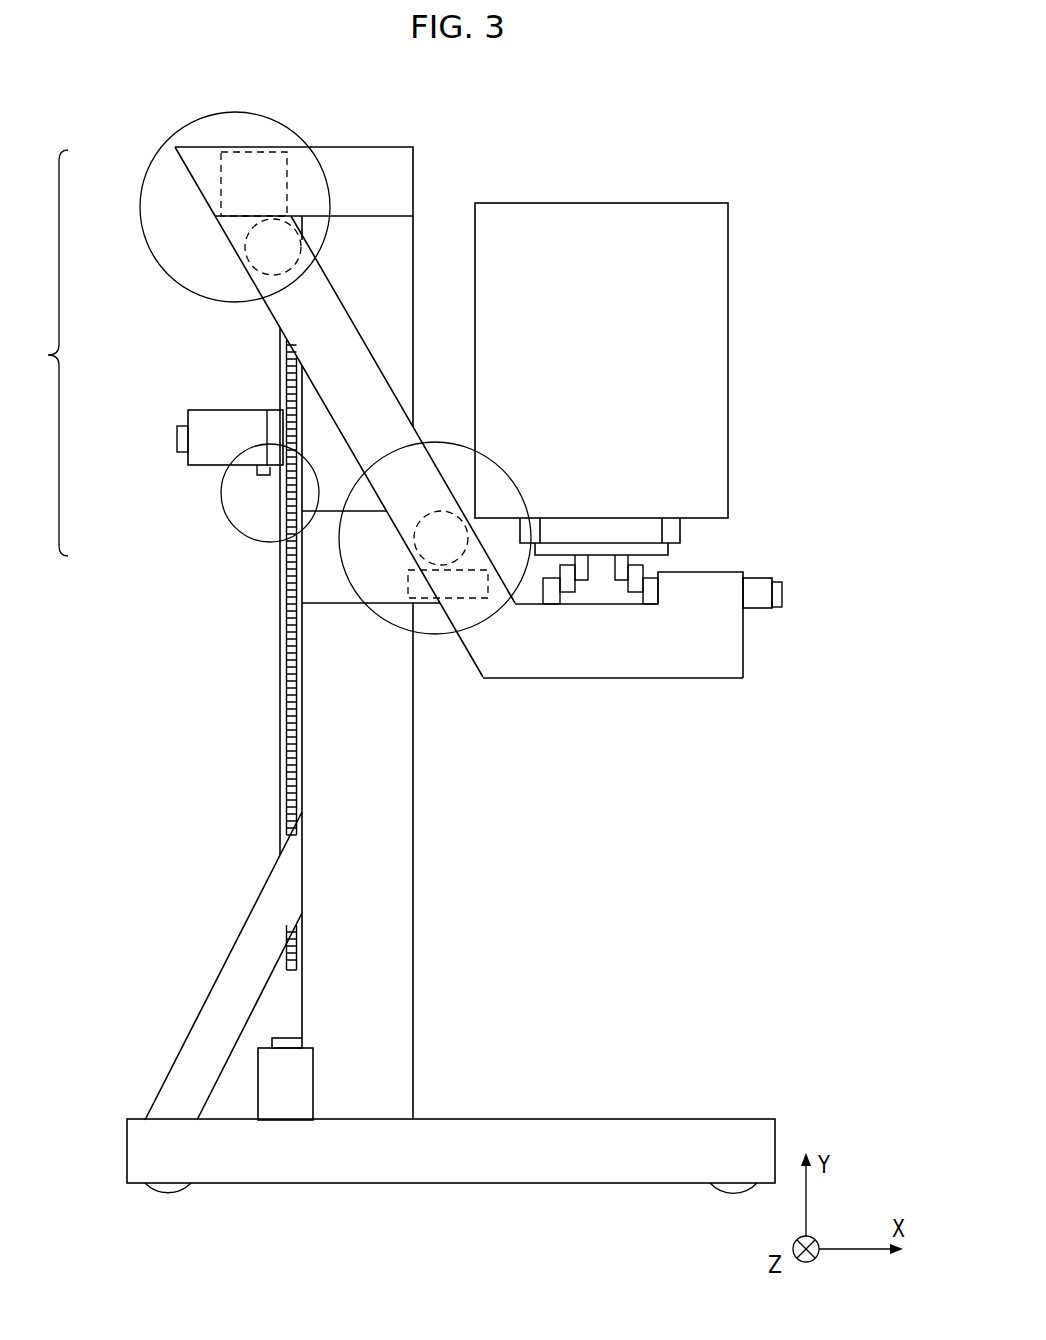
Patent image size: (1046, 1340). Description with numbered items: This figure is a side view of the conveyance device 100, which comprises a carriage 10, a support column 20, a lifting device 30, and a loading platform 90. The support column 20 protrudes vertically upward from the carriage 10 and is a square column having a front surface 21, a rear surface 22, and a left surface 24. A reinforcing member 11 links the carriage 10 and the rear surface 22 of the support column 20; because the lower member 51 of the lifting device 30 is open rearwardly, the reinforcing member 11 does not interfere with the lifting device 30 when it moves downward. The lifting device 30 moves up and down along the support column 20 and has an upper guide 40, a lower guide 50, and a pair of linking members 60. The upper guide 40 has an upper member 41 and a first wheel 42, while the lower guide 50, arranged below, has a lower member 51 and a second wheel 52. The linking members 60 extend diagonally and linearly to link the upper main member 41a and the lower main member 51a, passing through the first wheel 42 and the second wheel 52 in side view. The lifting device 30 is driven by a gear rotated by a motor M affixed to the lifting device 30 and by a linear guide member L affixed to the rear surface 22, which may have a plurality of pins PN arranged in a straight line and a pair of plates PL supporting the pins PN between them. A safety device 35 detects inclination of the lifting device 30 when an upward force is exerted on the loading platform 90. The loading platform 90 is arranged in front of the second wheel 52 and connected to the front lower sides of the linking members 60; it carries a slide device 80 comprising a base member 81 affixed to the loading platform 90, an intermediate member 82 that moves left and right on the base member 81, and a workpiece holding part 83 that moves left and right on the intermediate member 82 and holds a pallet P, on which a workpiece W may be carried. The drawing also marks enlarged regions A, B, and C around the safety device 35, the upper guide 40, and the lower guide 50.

The conveyance device 100 is at (117, 102).
The carriage 10 is at (625, 1127).
The reinforcing member 11 is at (243, 978).
The support column 20 is at (416, 668).
The front surface 21 is at (413, 797).
The rear surface 22 is at (290, 792).
The left surface 24 is at (370, 840).
The lifting device 30 is at (41, 353).
The safety device 35 is at (268, 478).
The upper guide 40 is at (294, 378).
The upper member 41 is at (358, 141).
The upper main member 41a is at (255, 142).
The first wheel 42 is at (297, 265).
The lower guide 50 is at (282, 568).
The lower member 51 is at (322, 618).
The lower main member 51a is at (453, 605).
The second wheel 52 is at (440, 500).
The linking members 60 is at (313, 343).
The slide device 80 is at (677, 587).
The base member 81 is at (652, 595).
The intermediate member 82 is at (637, 592).
The workpiece holding part 83 is at (601, 553).
The loading platform 90 is at (605, 657).
The region A is at (224, 485).
The region B is at (152, 260).
The region C is at (441, 442).
The linear guide member L is at (278, 607).
The motor M is at (177, 436).
The pallet P is at (630, 532).
The pins PN is at (285, 703).
The plates PL is at (284, 773).
The workpiece W is at (660, 222).